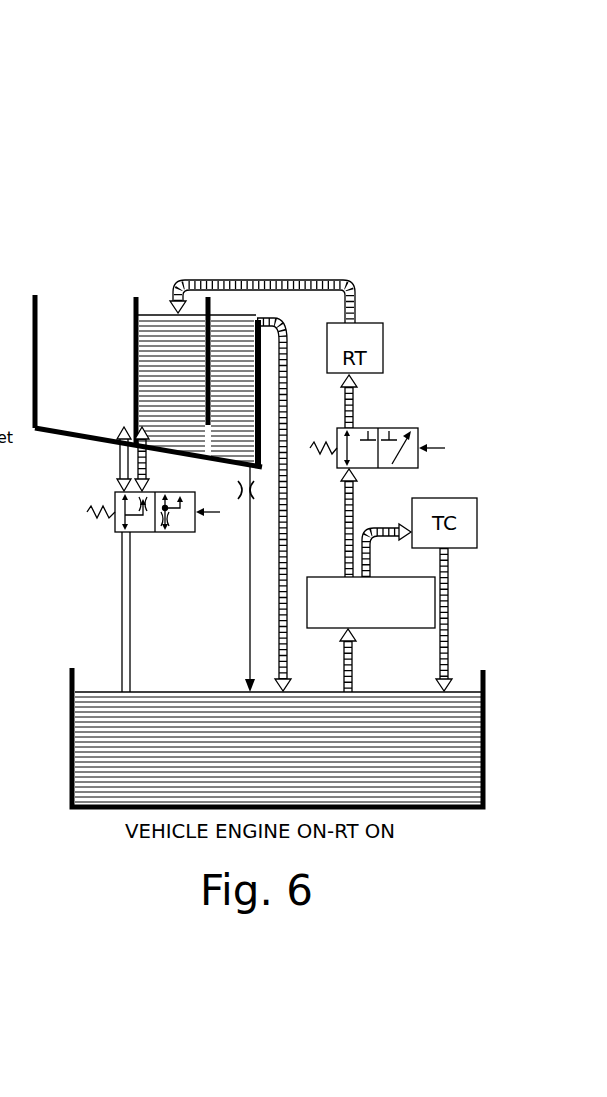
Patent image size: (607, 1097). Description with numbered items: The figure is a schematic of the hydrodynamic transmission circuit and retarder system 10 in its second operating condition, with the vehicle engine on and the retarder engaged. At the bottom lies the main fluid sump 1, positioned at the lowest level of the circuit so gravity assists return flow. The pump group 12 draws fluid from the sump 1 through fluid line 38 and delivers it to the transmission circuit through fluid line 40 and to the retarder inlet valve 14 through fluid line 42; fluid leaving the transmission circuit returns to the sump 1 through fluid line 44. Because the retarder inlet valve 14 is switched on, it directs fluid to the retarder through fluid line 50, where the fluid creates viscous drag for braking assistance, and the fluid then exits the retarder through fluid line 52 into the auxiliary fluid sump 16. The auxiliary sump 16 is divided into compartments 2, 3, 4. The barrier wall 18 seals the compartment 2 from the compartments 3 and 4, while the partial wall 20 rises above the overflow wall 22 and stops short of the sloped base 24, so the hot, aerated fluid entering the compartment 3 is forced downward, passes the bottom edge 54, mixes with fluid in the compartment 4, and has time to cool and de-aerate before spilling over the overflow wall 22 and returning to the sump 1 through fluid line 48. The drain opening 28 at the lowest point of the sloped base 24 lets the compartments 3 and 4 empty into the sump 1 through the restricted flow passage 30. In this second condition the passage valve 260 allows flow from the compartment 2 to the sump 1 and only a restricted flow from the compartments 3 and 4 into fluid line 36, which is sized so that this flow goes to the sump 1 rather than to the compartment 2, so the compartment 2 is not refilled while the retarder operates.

The hydrodynamic transmission circuit and retarder system 10 is at (207, 188).
The auxiliary fluid sump 16 is at (118, 262).
The compartment 2 is at (88, 378).
The compartment 3 is at (197, 385).
The compartment 4 is at (232, 391).
The barrier wall 18 is at (137, 293).
The partial wall 20 is at (208, 296).
The overflow wall 22 is at (268, 322).
The fluid line 52 is at (312, 281).
The fluid line 50 is at (357, 394).
The retarder inlet valve 14 is at (423, 418).
The sloped base 24 is at (150, 446).
The bottom edge 54 is at (207, 432).
The passage valve 260 is at (115, 531).
The fluid line 36 is at (122, 598).
The drain opening 28 is at (248, 463).
The fluid line 48 is at (289, 500).
The restricted flow passage 30 is at (248, 629).
The fluid line 42 is at (345, 536).
The fluid line 40 is at (388, 534).
The pump group 12 is at (436, 620).
The fluid line 44 is at (450, 598).
The fluid line 38 is at (355, 663).
The main fluid sump 1 is at (277, 737).